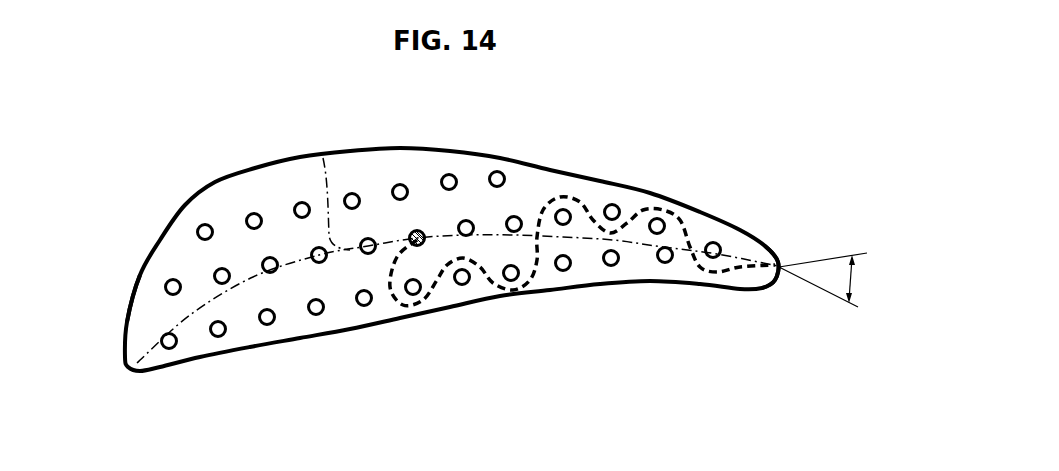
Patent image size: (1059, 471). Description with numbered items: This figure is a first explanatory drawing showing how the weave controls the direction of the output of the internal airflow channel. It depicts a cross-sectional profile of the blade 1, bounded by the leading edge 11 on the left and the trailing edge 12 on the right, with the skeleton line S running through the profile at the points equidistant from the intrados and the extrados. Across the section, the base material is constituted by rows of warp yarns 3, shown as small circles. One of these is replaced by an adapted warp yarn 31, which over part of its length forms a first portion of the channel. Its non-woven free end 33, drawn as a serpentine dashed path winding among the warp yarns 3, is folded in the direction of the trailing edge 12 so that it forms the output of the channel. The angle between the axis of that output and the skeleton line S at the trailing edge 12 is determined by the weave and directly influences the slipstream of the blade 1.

The blade 1 is at (574, 108).
The warp yarn 3 is at (204, 225).
The adapted warp yarn 31 is at (419, 232).
The free end 33 is at (564, 197).
The leading edge 11 is at (126, 363).
The trailing edge 12 is at (777, 283).
The skeleton line S is at (323, 157).